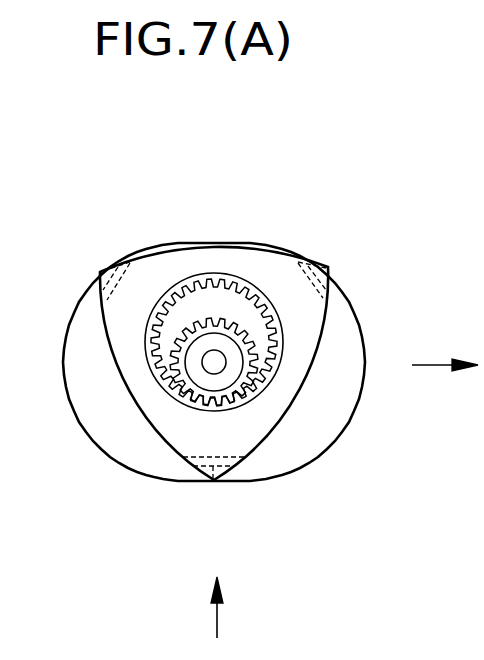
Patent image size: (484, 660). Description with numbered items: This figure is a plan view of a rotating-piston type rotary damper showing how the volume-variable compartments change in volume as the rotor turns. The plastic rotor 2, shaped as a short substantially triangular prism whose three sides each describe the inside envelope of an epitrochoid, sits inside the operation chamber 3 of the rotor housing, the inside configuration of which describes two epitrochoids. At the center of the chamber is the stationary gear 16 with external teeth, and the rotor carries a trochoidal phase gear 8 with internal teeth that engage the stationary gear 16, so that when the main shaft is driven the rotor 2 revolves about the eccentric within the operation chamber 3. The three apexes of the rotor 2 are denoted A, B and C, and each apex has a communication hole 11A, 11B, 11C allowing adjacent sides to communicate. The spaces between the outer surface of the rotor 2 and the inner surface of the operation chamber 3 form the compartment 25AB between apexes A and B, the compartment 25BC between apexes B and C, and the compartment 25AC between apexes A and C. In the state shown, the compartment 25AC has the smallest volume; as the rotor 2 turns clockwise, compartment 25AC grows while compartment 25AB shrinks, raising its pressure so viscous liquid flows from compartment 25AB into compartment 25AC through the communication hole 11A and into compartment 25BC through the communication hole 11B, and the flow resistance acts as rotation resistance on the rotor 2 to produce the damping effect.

The rotor 2 is at (257, 417).
The operation chamber 3 is at (322, 407).
The trochoidal phase gear 8 is at (236, 298).
The stationary gear 16 is at (195, 323).
The communication hole 11A is at (322, 268).
The communication hole 11B is at (217, 484).
The communication hole 11C is at (110, 293).
The volume-variable compartment 25AC is at (268, 246).
The volume-variable compartment 25AB is at (307, 431).
The volume-variable compartment 25BC is at (113, 431).
The apex A is at (333, 272).
The apex B is at (208, 480).
The apex C is at (100, 273).